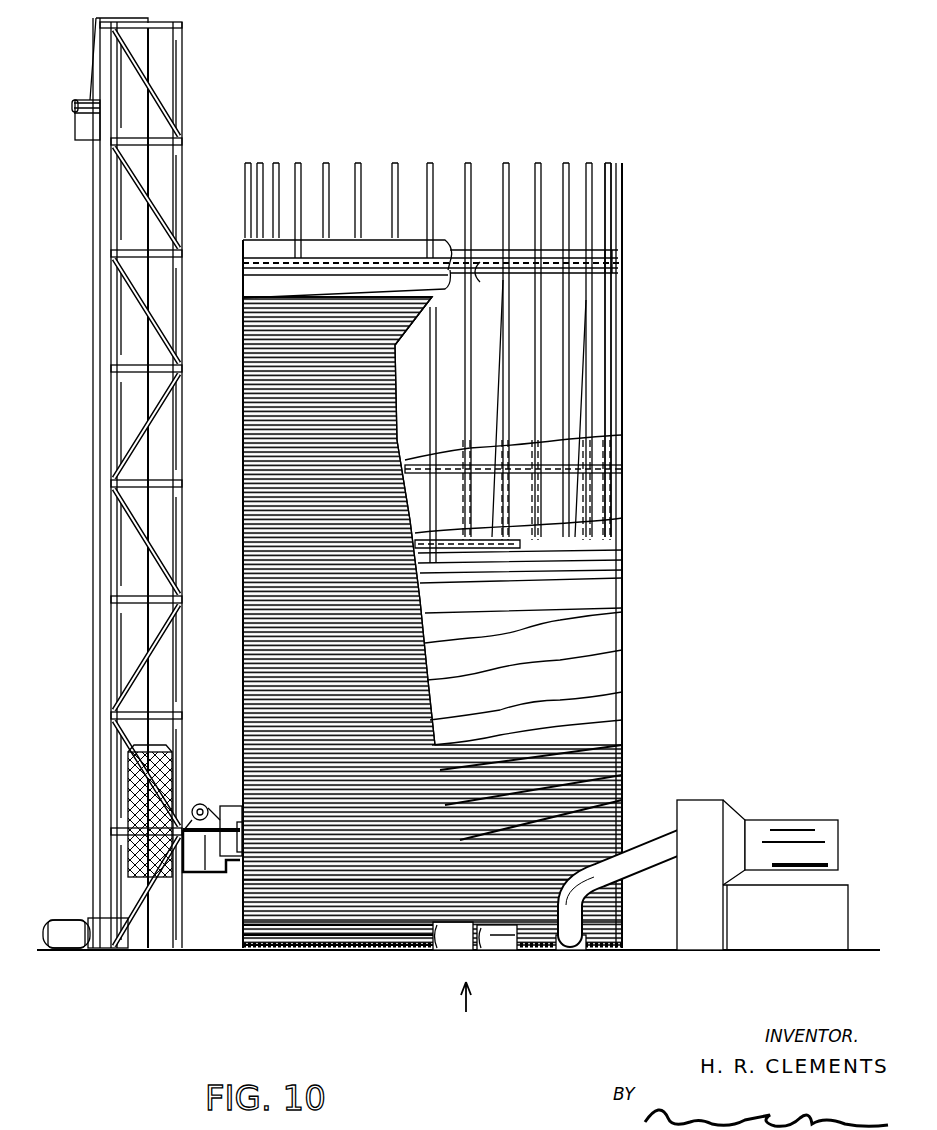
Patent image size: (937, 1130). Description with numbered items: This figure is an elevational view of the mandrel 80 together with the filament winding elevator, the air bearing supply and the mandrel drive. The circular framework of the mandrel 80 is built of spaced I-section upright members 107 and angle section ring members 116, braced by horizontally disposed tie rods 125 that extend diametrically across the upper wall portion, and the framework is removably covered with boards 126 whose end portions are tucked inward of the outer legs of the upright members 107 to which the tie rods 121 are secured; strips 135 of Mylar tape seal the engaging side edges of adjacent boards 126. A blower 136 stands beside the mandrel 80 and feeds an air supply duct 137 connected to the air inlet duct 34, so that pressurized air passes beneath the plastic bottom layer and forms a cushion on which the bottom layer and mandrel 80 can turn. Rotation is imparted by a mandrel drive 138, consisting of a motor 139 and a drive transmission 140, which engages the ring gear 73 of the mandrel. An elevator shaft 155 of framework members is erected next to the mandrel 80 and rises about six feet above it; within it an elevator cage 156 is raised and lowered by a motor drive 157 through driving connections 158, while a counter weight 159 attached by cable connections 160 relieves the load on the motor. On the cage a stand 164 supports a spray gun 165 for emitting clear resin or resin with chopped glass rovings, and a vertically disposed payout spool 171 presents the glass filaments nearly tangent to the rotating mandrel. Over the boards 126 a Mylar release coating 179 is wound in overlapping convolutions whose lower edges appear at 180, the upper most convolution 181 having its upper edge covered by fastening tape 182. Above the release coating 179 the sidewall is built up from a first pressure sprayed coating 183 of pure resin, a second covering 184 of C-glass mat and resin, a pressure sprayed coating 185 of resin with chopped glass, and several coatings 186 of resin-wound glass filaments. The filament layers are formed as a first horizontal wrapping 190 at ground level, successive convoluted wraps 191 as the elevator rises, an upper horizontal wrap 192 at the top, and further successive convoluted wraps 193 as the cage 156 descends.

The air inlet duct 34 is at (576, 958).
The ring gear 73 is at (358, 958).
The mandrel 80 is at (677, 172).
The upright members 107 is at (598, 162).
The angle section ring member 116 is at (598, 262).
The tie rods 121 is at (598, 335).
The tie rod 125 is at (577, 258).
The sheets 126 is at (625, 500).
The strips of Mylar tape 135 is at (450, 465).
The blower 136 is at (820, 820).
The air supply duct 137 is at (650, 872).
The mandrel drive 138 is at (469, 1010).
The motor 139 is at (458, 948).
The drive transmission 140 is at (502, 950).
The elevator shaft 155 is at (166, 404).
The elevator cage 156 is at (128, 760).
The motor drive 157 is at (72, 955).
The driving connections 158 is at (72, 250).
The counter weight 159 is at (76, 122).
The cable connections 160 is at (88, 94).
The stand 164 is at (192, 862).
The gun 165 is at (204, 805).
The payout spool 171 is at (235, 810).
The release coating 179 is at (622, 578).
The lower edges of successive convolutions 180 is at (520, 615).
The upper most convolution 181 is at (250, 286).
The fastening tape 182 is at (246, 257).
The first pressure sprayed coating 183 is at (615, 645).
The second covering 184 is at (612, 685).
The pressure sprayed coating 185 is at (612, 715).
The coatings of resin-wound glass filaments 186 is at (622, 778).
The first wrapping 190 is at (302, 960).
The successive convoluted wraps 191 is at (258, 895).
The upper horizontal wrap 192 is at (250, 308).
The successive convoluted wraps 193 is at (255, 645).